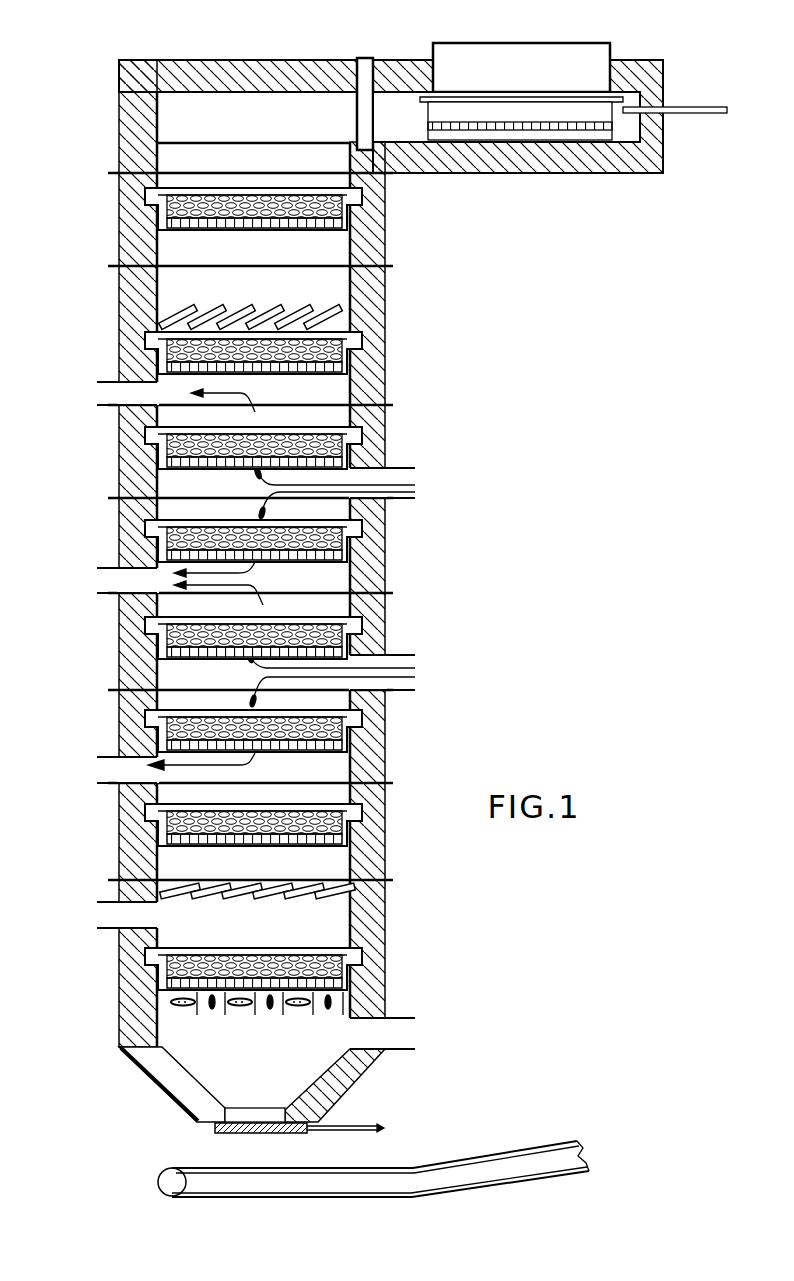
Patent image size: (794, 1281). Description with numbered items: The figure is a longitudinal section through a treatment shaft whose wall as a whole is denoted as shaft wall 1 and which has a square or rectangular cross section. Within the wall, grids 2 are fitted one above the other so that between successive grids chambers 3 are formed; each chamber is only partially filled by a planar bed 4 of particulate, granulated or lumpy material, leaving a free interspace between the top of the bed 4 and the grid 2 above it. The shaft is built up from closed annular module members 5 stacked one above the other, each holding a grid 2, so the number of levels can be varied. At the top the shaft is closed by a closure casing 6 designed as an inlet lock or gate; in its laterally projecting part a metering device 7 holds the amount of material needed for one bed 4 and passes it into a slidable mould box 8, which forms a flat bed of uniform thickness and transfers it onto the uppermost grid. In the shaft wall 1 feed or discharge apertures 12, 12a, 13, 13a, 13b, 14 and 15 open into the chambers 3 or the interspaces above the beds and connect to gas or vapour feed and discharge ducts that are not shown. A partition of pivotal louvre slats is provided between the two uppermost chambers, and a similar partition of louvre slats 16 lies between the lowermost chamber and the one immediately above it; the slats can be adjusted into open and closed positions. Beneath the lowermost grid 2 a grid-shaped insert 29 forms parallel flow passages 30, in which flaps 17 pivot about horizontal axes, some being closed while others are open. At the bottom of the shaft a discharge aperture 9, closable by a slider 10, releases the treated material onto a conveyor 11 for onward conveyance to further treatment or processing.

The shaft wall 1 is at (368, 583).
The grid 2 is at (313, 230).
The chamber 3 is at (332, 283).
The bed 4 is at (313, 218).
The module member 5 is at (128, 208).
The closure casing 6 is at (135, 122).
The metering device 7 is at (565, 65).
The mould box 8 is at (498, 112).
The discharge aperture 9 is at (270, 1117).
The slider 10 is at (245, 1133).
The conveyor 11 is at (265, 1185).
The feed or discharge aperture 12 is at (386, 488).
The feed or discharge aperture 12a is at (386, 668).
The feed or discharge aperture 13 is at (110, 393).
The feed or discharge aperture 13a is at (115, 578).
The feed or discharge aperture 13b is at (115, 770).
The feed or discharge aperture 14 is at (386, 1030).
The feed or discharge aperture 15 is at (115, 912).
The louvre slats 16 is at (327, 313).
The flap 17 is at (185, 1004).
The grid-shaped insert 29 is at (318, 1008).
The flow passage 30 is at (200, 1008).